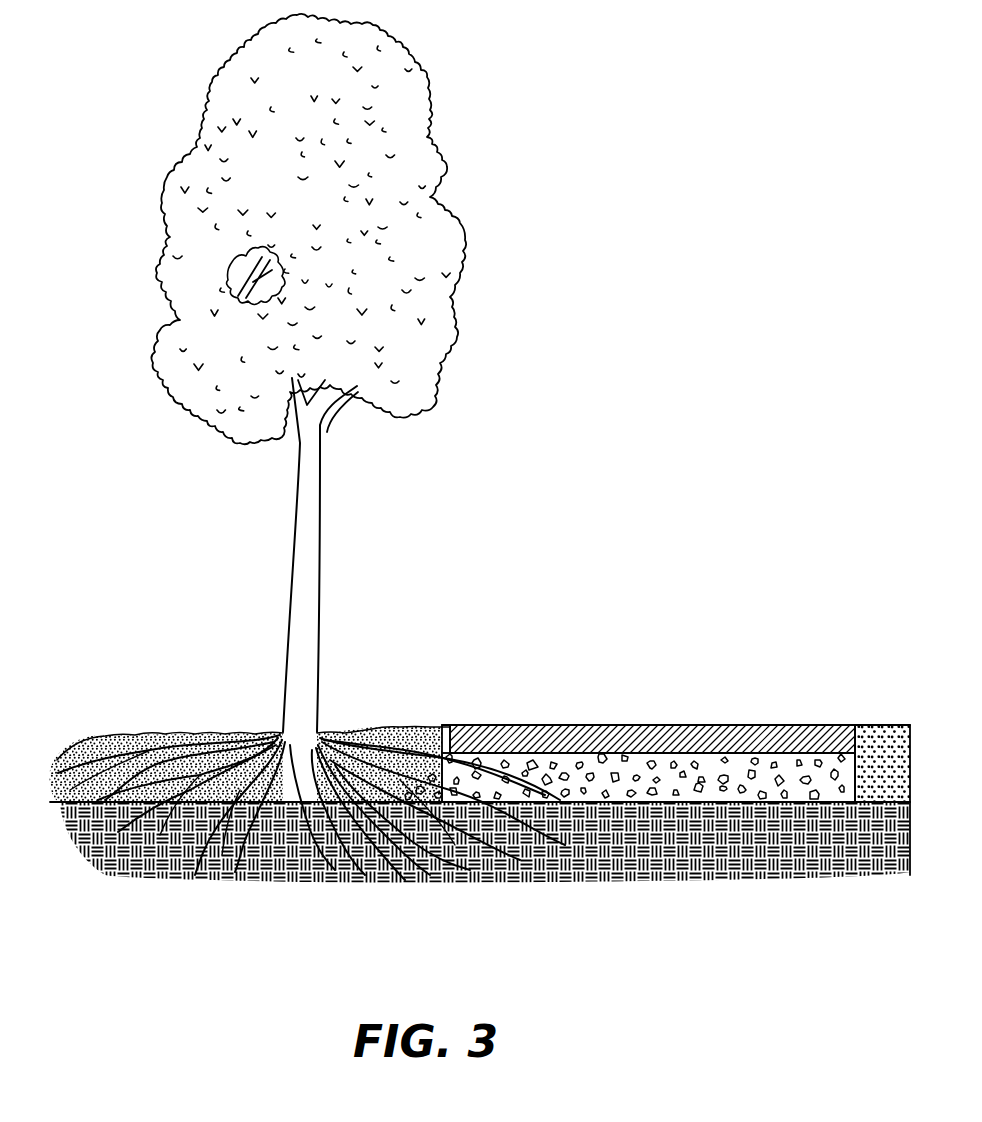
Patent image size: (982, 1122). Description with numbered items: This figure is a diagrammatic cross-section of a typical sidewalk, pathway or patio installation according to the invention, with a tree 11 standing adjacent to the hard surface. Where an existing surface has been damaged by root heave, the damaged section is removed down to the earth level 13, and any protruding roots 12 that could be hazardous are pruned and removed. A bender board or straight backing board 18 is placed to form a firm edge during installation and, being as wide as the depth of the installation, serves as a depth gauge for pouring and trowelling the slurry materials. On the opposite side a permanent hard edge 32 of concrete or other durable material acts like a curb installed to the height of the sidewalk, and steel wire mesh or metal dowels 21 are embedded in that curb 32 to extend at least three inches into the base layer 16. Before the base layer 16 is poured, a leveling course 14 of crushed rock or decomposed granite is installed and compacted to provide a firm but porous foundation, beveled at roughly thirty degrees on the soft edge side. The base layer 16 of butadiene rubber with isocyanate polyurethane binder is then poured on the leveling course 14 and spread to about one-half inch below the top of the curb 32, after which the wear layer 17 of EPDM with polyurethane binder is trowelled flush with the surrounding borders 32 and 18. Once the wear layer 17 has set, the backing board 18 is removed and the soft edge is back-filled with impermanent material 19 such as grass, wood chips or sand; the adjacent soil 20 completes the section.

The tree 11 is at (310, 538).
The protruding roots 12 is at (195, 733).
The earth level 13 is at (515, 863).
The leveling course 14 is at (702, 772).
The base layer 16 is at (572, 737).
The wear layer 17 is at (640, 725).
The backing board 18 is at (446, 722).
The soft curb material 19 is at (448, 725).
The soil adjacent trunk 20 is at (384, 727).
The steel wire mesh or metal dowels 21 is at (855, 750).
The hard edge 32 is at (875, 730).